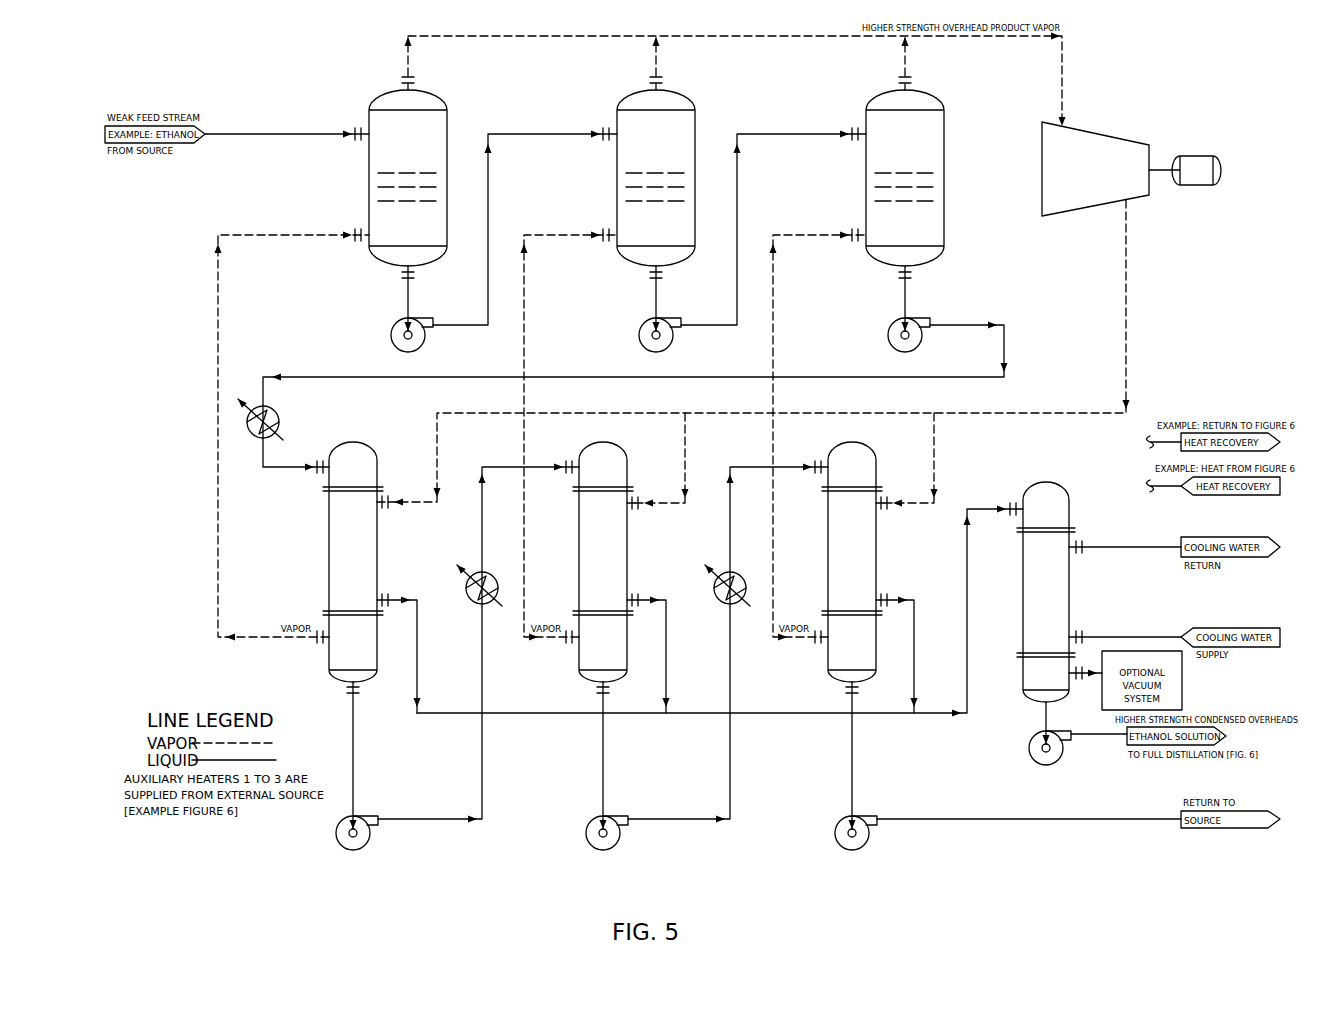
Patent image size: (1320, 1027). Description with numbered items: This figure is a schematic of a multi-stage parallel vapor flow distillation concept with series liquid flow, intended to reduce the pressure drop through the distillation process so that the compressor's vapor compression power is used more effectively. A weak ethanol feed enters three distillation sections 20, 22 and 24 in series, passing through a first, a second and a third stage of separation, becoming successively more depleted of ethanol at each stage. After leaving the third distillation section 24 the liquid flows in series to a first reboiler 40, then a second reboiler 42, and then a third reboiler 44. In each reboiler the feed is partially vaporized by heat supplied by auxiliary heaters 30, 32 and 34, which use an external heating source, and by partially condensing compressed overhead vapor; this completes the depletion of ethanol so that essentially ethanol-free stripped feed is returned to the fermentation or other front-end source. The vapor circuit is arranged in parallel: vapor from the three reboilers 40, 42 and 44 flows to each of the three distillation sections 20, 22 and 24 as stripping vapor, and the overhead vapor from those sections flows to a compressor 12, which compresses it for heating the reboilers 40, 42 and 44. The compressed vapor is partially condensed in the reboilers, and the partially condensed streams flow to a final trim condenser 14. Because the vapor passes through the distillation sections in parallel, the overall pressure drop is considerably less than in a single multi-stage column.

The compressor 12 is at (1092, 132).
The final trim condenser 14 is at (1070, 603).
The distillation section 20 is at (436, 96).
The distillation section 22 is at (684, 96).
The distillation section 24 is at (932, 96).
The auxiliary heater 30 is at (253, 437).
The auxiliary heater 32 is at (493, 576).
The auxiliary heater 34 is at (741, 576).
The first reboiler 40 is at (353, 443).
The second reboiler 42 is at (604, 443).
The third reboiler 44 is at (853, 443).